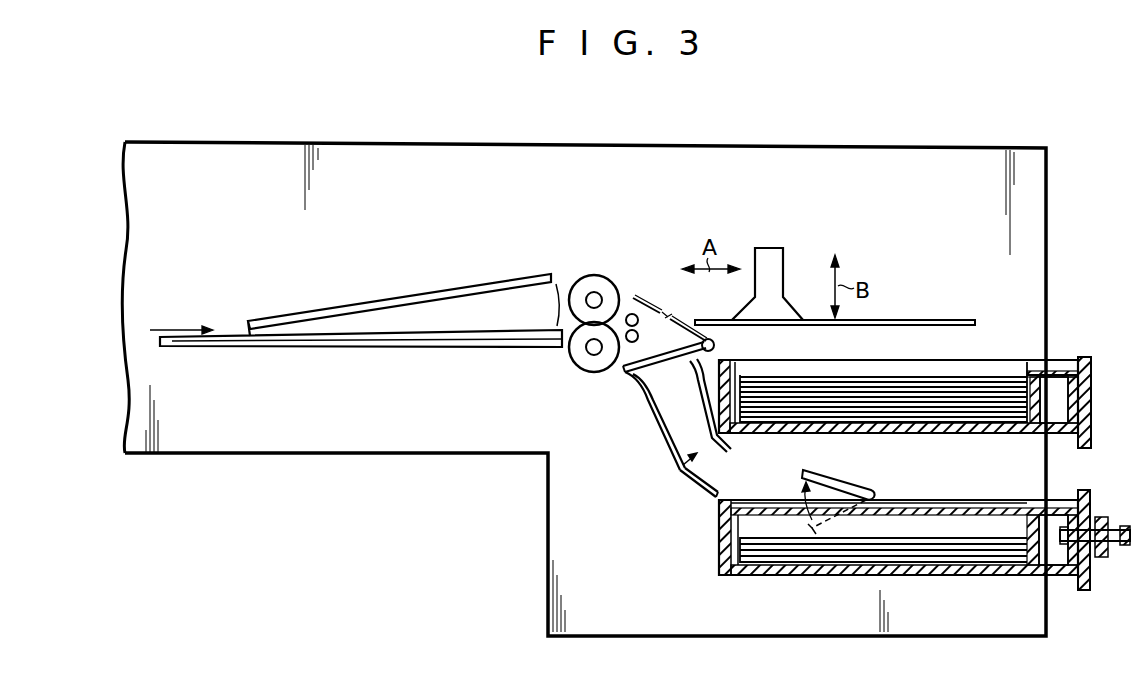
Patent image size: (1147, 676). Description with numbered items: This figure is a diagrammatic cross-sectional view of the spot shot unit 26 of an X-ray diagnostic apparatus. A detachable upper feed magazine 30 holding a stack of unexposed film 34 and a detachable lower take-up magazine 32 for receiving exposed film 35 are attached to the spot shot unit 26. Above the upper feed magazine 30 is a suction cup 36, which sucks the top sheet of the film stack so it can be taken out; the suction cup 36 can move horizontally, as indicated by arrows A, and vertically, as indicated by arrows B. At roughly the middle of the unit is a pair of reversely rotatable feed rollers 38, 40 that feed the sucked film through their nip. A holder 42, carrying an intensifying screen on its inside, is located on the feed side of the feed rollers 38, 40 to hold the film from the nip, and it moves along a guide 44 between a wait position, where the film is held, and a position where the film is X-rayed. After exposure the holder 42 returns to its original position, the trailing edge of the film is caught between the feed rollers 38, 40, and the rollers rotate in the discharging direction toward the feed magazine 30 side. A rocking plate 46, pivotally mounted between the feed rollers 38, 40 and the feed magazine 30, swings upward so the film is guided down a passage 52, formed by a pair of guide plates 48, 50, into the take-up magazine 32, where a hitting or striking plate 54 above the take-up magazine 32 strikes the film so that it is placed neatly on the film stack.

The spot shot unit 26 is at (993, 122).
The upper feed magazine 30 is at (1080, 352).
The lower take-up magazine 32 is at (1062, 488).
The unexposed film 34 is at (917, 320).
The exposed film 35 is at (816, 564).
The suction cup 36 is at (773, 250).
The feed roller 38 is at (603, 275).
The feed roller 40 is at (580, 372).
The holder 42 is at (398, 240).
The guide 44 is at (336, 348).
The rocking plate 46 is at (664, 362).
The guide plate 48 is at (668, 448).
The guide plate 50 is at (722, 460).
The passage 52 is at (674, 480).
The hitting or striking plate 54 is at (828, 475).